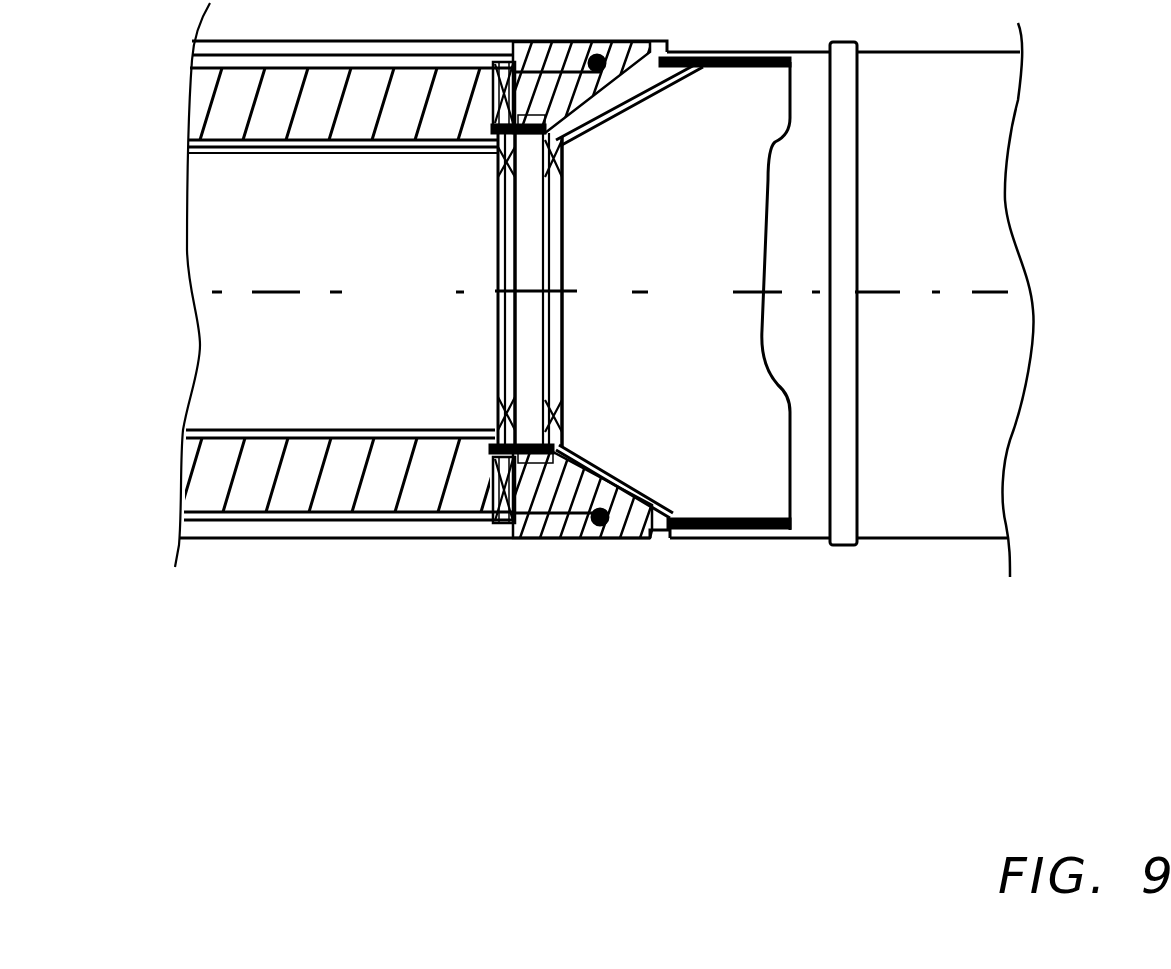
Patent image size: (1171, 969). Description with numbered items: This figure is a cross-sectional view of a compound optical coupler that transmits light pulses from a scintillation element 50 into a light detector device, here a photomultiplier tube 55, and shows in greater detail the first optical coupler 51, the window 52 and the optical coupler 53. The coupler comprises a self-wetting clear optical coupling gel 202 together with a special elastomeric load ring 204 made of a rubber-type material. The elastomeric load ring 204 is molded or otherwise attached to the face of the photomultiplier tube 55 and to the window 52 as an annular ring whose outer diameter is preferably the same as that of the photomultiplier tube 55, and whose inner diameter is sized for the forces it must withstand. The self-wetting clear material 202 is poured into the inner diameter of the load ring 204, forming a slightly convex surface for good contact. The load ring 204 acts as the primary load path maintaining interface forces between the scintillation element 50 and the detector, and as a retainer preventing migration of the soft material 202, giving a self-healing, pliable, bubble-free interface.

The scintillation element 50 is at (743, 338).
The first optical coupler 51 is at (552, 347).
The window 52 is at (548, 206).
The optical coupler 53 is at (503, 345).
The photomultiplier tube 55 is at (290, 398).
The self-wetting clear optical coupling gel 202 is at (500, 276).
The elastomeric load ring 204 is at (497, 180).